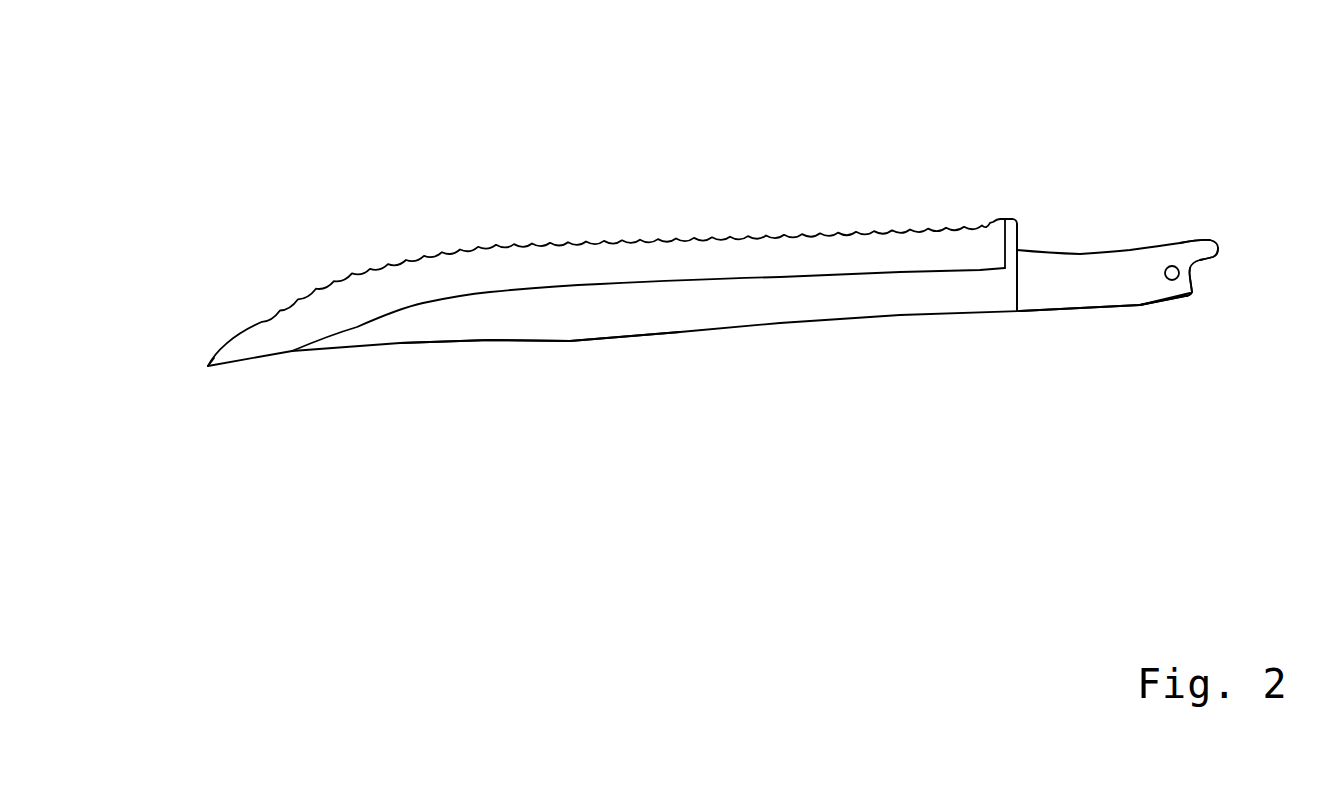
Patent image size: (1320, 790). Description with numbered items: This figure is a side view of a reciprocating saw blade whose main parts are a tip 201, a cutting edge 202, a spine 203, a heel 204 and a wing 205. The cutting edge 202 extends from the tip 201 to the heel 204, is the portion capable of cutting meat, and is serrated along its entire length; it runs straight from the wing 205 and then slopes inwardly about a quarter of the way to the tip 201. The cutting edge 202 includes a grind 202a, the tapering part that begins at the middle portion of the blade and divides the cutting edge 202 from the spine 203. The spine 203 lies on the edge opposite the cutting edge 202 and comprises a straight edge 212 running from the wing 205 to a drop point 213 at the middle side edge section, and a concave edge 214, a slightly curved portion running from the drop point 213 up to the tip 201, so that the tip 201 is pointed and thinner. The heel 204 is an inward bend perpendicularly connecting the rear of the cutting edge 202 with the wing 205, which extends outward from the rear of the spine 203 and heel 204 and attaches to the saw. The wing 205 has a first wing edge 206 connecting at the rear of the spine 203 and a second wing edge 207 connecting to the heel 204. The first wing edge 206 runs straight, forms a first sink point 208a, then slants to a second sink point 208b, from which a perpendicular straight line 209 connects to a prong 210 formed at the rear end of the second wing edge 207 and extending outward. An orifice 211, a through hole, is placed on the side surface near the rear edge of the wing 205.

The tip 201 is at (208, 364).
The cutting edge 202 is at (1002, 218).
The grind 202a is at (455, 298).
The spine 203 is at (1027, 312).
The heel 204 is at (1017, 230).
The wing 205 is at (1119, 280).
The first wing edge 206 is at (1178, 243).
The second wing edge 207 is at (1055, 312).
The first sink point 208a is at (1140, 305).
The second sink point 208b is at (1190, 292).
The perpendicular straight line 209 is at (1192, 280).
The prong 210 is at (1201, 249).
The orifice 211 is at (1172, 266).
The straight edge 212 is at (1020, 322).
The drop point 213 is at (568, 342).
The concave edge 214 is at (563, 343).